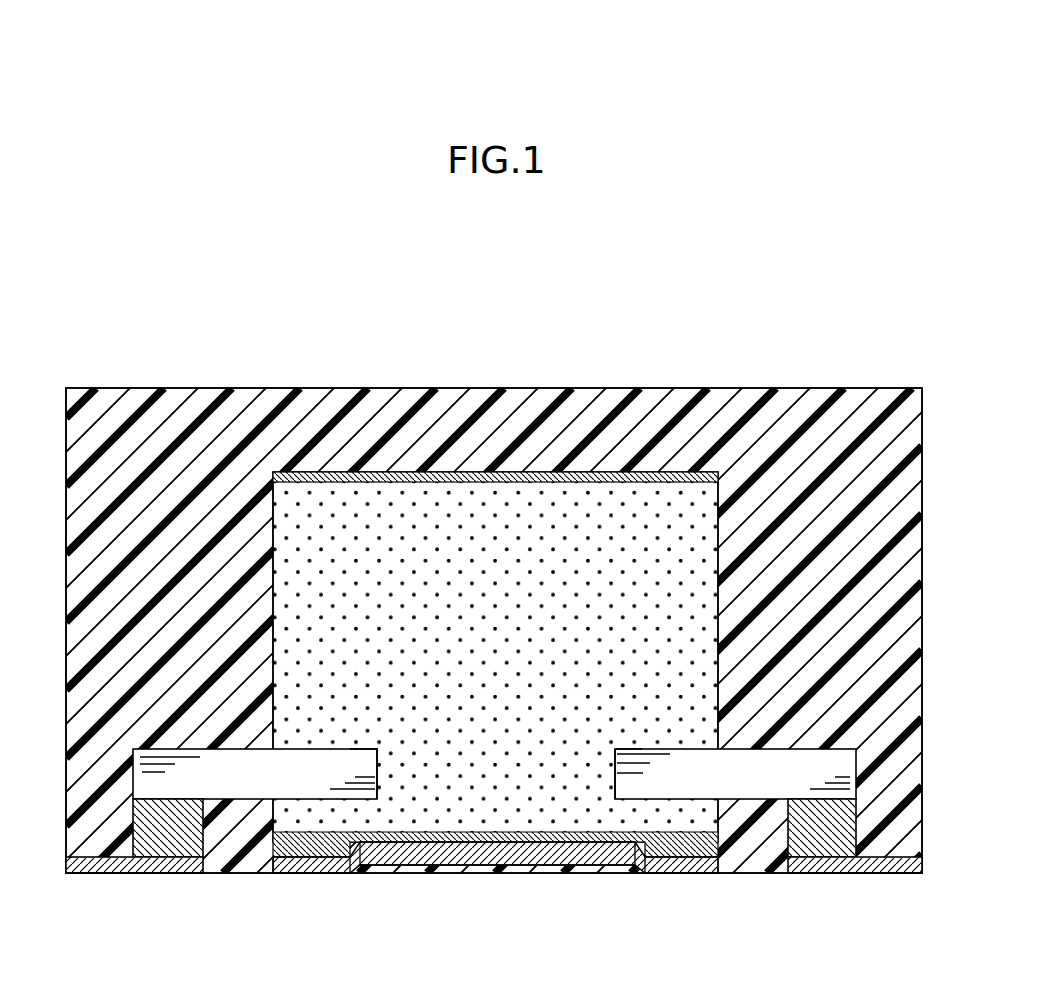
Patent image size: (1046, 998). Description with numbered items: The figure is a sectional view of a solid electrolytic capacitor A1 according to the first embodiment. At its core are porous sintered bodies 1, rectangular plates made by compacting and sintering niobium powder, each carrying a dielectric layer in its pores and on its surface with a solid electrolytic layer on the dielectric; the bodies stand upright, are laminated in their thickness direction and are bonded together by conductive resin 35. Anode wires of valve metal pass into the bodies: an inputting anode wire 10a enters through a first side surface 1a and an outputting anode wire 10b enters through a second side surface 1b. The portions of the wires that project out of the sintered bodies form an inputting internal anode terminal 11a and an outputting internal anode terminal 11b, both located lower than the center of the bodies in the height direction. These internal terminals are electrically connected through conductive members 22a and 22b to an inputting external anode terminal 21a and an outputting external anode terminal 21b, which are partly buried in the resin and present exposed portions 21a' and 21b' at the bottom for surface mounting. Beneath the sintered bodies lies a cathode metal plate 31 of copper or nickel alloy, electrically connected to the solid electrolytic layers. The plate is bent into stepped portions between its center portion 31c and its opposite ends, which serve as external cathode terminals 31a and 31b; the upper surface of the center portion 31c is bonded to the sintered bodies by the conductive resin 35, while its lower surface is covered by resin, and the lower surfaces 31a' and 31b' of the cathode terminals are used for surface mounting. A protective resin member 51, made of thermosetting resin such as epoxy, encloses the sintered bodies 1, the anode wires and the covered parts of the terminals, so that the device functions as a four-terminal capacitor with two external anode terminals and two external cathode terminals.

The solid electrolytic capacitor A1 is at (910, 323).
The porous sintered body 1 is at (572, 820).
The first side surface 1a is at (272, 648).
The second side surface 1b is at (722, 628).
The inputting anode wire 10a is at (362, 752).
The outputting anode wire 10b is at (635, 752).
The inputting internal anode terminal 11a is at (232, 772).
The outputting internal anode terminal 11b is at (750, 770).
The inputting external anode terminal 21a is at (134, 902).
The exposed portion 21a' is at (141, 921).
The outputting external anode terminal 21b is at (866, 910).
The exposed portion 21b' is at (855, 910).
The conductive member 22a is at (205, 823).
The conductive member 22b is at (790, 845).
The cathode metal plate 31 is at (465, 868).
The inputting external cathode terminal 31a is at (699, 899).
The lower surface 31a' is at (675, 921).
The outputting external cathode terminal 31b is at (314, 913).
The lower surface 31b' is at (349, 910).
The center portion 31c is at (517, 868).
The conductive resin 35 is at (408, 473).
The protective resin member 51 is at (608, 415).